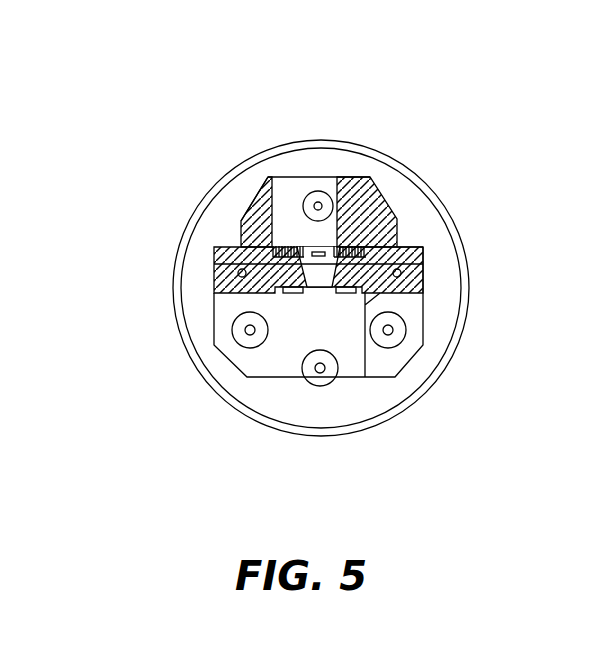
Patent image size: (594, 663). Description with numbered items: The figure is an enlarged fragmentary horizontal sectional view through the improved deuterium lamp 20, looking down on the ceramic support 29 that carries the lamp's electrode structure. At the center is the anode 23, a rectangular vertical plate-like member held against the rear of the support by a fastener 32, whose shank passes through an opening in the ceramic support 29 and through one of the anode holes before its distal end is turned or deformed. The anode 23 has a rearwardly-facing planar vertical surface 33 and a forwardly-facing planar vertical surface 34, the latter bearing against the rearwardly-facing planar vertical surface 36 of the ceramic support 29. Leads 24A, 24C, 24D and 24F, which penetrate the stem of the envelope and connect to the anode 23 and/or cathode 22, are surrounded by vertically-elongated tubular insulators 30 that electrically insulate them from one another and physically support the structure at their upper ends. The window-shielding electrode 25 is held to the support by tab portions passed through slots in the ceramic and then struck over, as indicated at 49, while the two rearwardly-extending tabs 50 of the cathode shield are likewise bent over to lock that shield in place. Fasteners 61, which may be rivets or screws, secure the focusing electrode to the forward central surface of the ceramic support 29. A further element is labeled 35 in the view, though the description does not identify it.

The deuterium lamp 20 is at (178, 75).
The cathode 22 is at (388, 347).
The anode 23 is at (345, 250).
The lead 24A is at (306, 200).
The lead 24C is at (232, 330).
The lead 24D is at (319, 386).
The lead 24F is at (405, 276).
The window-shielding electrode 25 is at (276, 370).
The ceramic support 29 is at (393, 214).
The tubular insulator 30 is at (317, 200).
The fastener 32 is at (270, 190).
The rearwardly-facing planar vertical surface 33 is at (244, 222).
The forwardly-facing planar vertical surface 34 is at (214, 263).
The contact teeth 35 is at (242, 236).
The rearwardly-facing planar vertical surface 36 is at (400, 265).
The struck-over tab end 49 is at (242, 247).
The rearwardly-extending tab 50 is at (405, 271).
The fastener 61 is at (290, 293).